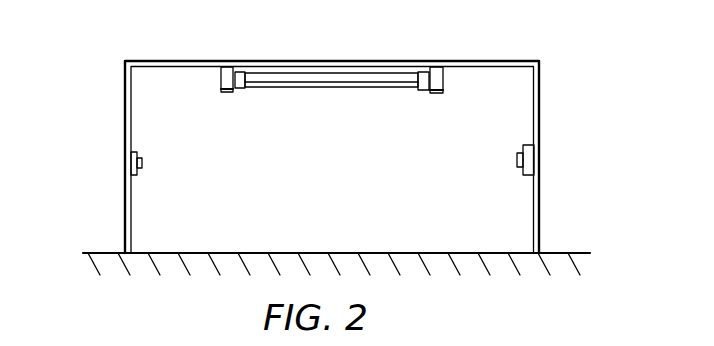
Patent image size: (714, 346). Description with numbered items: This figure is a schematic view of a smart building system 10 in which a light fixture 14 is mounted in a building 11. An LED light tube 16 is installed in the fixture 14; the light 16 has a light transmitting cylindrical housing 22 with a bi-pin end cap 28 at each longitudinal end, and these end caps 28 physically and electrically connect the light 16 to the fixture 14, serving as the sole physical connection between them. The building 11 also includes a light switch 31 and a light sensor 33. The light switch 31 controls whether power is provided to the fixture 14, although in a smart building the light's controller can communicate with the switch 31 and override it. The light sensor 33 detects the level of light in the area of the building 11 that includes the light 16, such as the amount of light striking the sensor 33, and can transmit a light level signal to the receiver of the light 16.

The display assembly 10 is at (330, 138).
The building 11 is at (528, 106).
The light fixture 14 is at (227, 93).
The LED light tube 16 is at (301, 151).
The housing 22 is at (327, 88).
The end caps 28 is at (242, 67).
The light switch 31 is at (141, 162).
The light sensor 33 is at (522, 178).